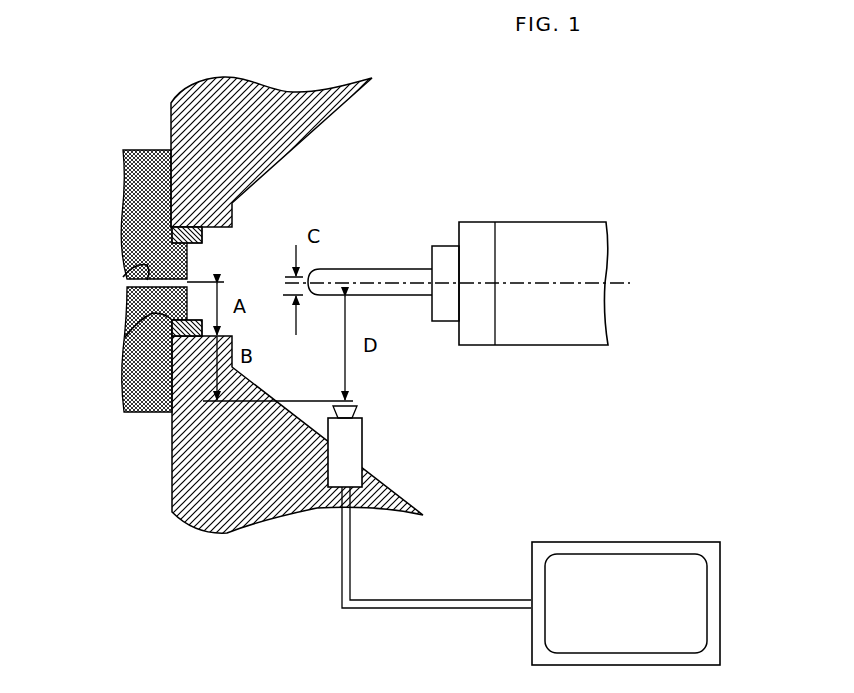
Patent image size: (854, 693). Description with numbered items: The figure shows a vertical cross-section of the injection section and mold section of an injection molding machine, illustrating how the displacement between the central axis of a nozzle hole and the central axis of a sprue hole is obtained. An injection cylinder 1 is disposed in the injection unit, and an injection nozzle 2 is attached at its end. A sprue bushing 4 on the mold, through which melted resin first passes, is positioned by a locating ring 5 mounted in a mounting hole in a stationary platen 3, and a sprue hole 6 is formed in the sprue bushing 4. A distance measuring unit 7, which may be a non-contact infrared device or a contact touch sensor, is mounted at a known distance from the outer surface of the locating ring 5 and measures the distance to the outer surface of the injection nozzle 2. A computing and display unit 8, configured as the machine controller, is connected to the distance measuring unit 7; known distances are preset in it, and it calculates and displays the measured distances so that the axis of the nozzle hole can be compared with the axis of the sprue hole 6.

The injection cylinder 1 is at (543, 220).
The injection nozzle 2 is at (387, 270).
The stationary platen 3 is at (243, 73).
The sprue bushing 4 is at (125, 193).
The locating ring 5 is at (120, 337).
The sprue hole 6 is at (123, 266).
The distance measuring unit 7 is at (355, 450).
The computing and display unit 8 is at (637, 542).